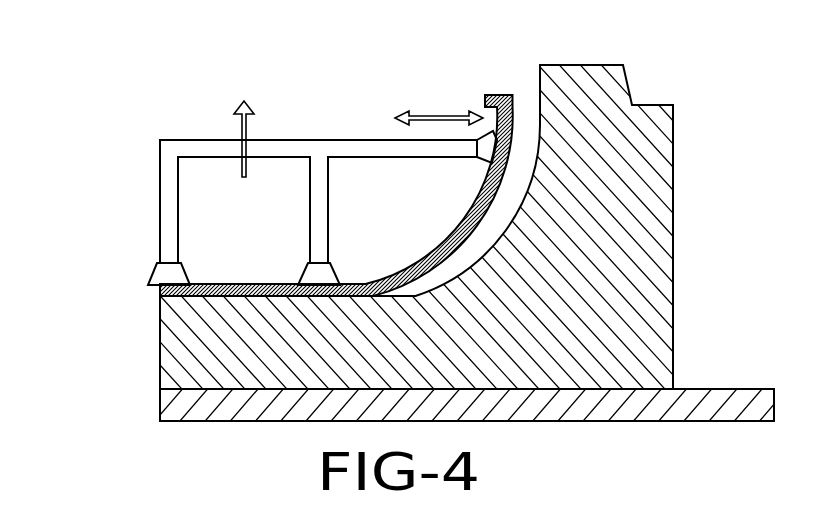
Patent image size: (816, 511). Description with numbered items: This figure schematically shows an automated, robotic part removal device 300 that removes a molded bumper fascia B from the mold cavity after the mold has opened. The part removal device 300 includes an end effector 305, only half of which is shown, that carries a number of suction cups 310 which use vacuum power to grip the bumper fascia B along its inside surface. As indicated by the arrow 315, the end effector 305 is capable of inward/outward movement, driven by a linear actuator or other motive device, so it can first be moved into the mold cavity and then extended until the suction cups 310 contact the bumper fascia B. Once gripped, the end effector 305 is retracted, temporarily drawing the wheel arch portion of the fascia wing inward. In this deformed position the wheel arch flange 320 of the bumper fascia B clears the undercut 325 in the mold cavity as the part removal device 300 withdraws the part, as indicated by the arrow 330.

The part removal device 300 is at (84, 114).
The end effector 305 is at (164, 124).
The suction cups 310 is at (164, 278).
The arrow 315 is at (433, 115).
The wheel arch flange 320 is at (502, 97).
The undercut 325 is at (541, 95).
The arrow 330 is at (250, 129).
The bumper fascia B is at (498, 195).